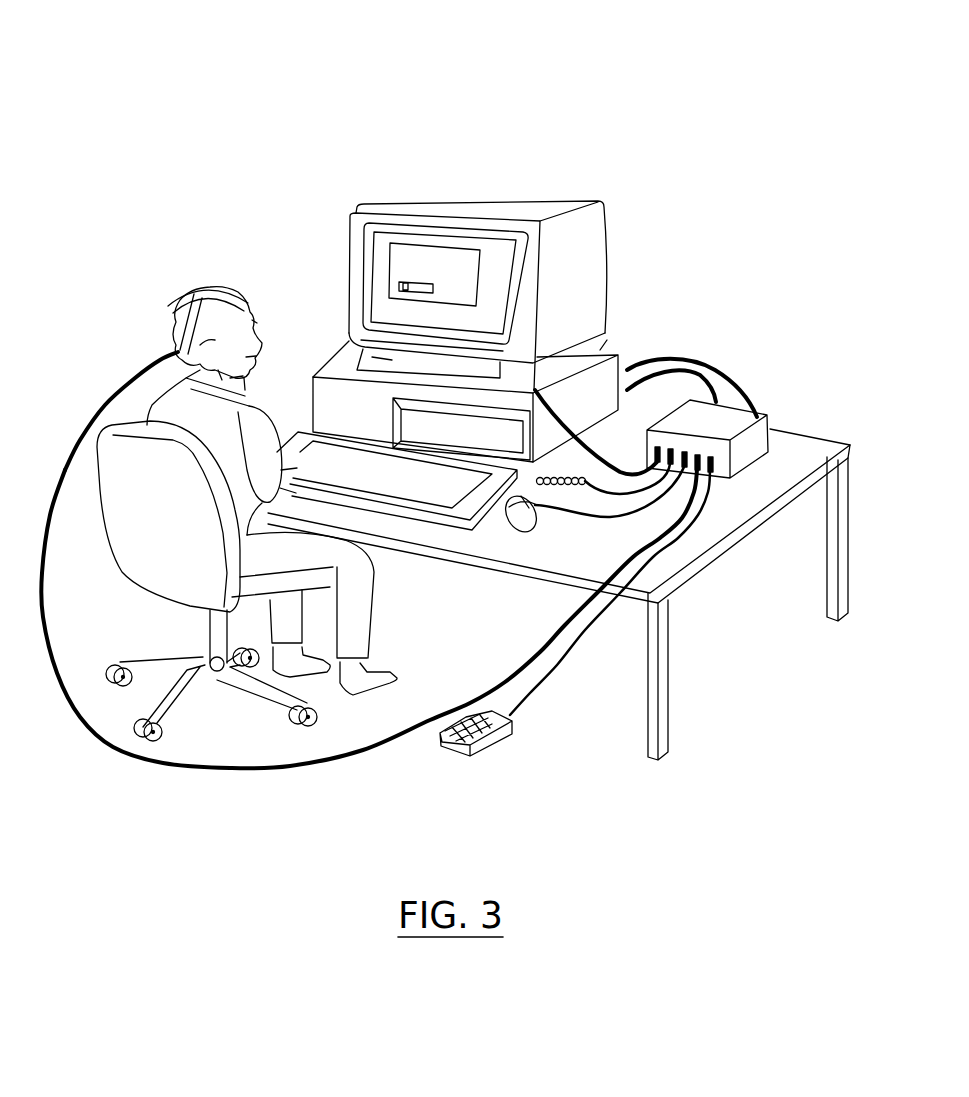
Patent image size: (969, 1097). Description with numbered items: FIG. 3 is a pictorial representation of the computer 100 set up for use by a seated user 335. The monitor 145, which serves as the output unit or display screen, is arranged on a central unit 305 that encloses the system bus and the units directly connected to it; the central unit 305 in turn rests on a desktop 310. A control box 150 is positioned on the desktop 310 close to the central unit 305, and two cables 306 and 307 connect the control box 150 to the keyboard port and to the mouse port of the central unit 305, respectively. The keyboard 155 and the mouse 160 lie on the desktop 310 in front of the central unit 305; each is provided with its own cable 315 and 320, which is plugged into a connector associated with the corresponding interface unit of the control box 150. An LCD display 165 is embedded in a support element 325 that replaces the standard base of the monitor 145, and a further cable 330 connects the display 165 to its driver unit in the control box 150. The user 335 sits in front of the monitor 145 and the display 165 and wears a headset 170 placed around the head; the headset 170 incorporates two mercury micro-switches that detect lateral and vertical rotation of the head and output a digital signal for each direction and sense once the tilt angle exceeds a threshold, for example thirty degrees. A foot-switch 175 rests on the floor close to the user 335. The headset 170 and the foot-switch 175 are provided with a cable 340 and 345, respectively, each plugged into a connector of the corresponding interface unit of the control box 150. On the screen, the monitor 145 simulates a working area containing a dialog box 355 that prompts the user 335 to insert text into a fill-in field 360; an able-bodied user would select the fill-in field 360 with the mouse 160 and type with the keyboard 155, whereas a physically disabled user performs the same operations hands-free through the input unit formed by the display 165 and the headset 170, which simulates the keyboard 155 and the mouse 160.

The computer 100 is at (373, 100).
The monitor 145 is at (483, 266).
The control box 150 is at (758, 448).
The keyboard 155 is at (480, 553).
The mouse 160 is at (519, 532).
The LCD display 165 is at (388, 358).
The headset 170 is at (183, 297).
The foot-switch 175 is at (487, 742).
The central unit 305 is at (607, 340).
The cable 306 is at (701, 368).
The cable 307 is at (752, 395).
The desktop 310 is at (848, 455).
The cable 315 is at (632, 500).
The cable 320 is at (593, 513).
The support element 325 is at (560, 363).
The cable 330 is at (596, 432).
The user 335 is at (130, 380).
The cable 340 is at (300, 767).
The cable 345 is at (603, 630).
The dialog box 355 is at (450, 257).
The fill-in field 360 is at (399, 283).